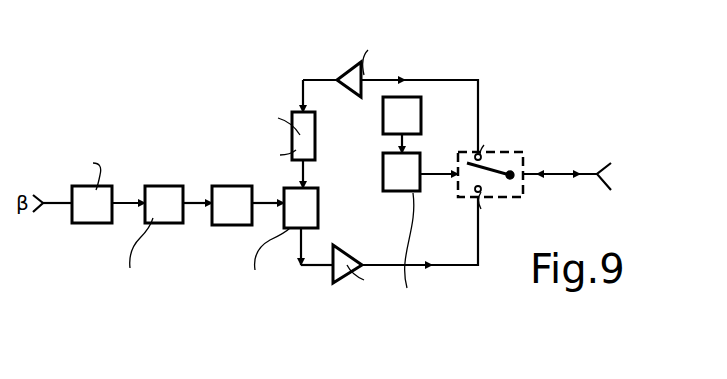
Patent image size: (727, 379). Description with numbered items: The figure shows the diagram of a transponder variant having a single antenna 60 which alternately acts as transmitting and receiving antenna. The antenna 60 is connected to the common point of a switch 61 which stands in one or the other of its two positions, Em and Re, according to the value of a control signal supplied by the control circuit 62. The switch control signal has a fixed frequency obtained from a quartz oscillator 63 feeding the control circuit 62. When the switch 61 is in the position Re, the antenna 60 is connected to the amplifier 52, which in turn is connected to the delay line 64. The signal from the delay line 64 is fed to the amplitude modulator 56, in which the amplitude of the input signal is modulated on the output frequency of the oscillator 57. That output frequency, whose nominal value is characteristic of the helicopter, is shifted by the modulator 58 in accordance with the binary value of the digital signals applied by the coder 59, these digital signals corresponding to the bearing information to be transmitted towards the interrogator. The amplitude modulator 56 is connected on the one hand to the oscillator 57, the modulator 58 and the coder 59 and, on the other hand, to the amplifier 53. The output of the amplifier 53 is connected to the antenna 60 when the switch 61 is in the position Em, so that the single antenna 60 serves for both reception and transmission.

The amplifier 52 is at (355, 80).
The amplifier 53 is at (342, 270).
The amplitude modulator 56 is at (306, 206).
The oscillator 57 is at (233, 218).
The modulator 58 is at (167, 214).
The coder 59 is at (96, 212).
The antenna 60 is at (599, 160).
The switch 61 is at (523, 152).
The control circuit 62 is at (408, 184).
The quartz oscillator 63 is at (412, 122).
The delay line 64 is at (279, 130).